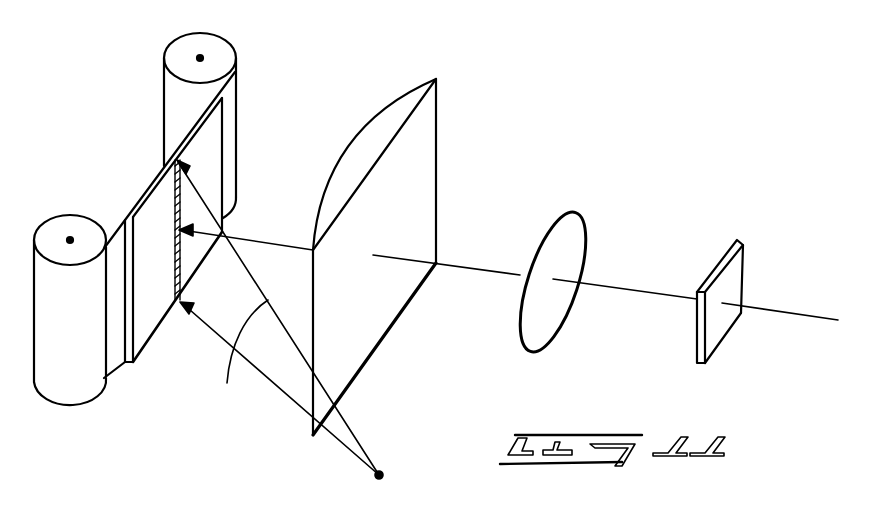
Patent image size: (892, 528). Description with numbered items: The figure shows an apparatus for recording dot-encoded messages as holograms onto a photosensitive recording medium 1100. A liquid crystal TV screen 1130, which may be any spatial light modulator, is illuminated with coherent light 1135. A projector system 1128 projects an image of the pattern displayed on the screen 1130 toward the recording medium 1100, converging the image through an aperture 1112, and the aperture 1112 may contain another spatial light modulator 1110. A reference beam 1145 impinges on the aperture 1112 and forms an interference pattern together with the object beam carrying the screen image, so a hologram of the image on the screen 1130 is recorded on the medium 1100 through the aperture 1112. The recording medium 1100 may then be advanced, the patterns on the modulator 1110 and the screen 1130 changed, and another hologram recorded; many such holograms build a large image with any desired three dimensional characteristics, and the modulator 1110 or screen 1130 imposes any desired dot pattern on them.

The recording medium 1100 is at (237, 103).
The spatial light modulator 1110 is at (178, 217).
The aperture 1112 is at (174, 160).
The projector system 1128 is at (575, 210).
The liquid crystal TV screen 1130 is at (718, 255).
The coherent light 1135 is at (793, 313).
The reference beam 1145 is at (207, 325).